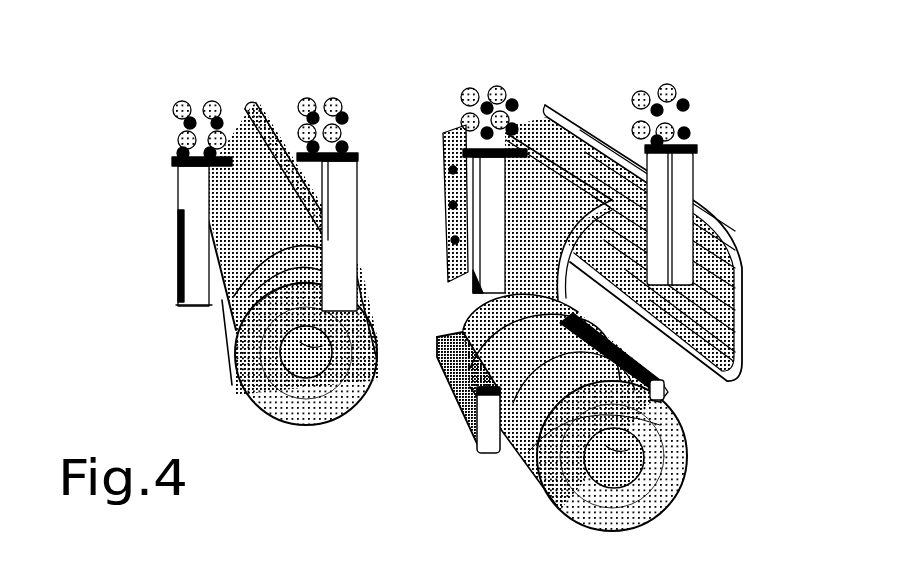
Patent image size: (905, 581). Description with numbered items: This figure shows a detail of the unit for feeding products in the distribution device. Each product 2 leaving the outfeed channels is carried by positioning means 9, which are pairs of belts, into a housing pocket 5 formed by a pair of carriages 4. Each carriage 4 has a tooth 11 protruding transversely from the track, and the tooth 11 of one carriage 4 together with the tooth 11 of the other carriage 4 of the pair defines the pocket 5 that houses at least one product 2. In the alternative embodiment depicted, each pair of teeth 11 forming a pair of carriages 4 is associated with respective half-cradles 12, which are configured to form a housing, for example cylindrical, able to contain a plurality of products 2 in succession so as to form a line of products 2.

The product 2 is at (330, 393).
The carriage 4 is at (206, 80).
The housing pocket 5 is at (672, 355).
The positioning means 9 is at (478, 465).
The tooth 11 is at (347, 198).
The half-cradle 12 is at (545, 245).